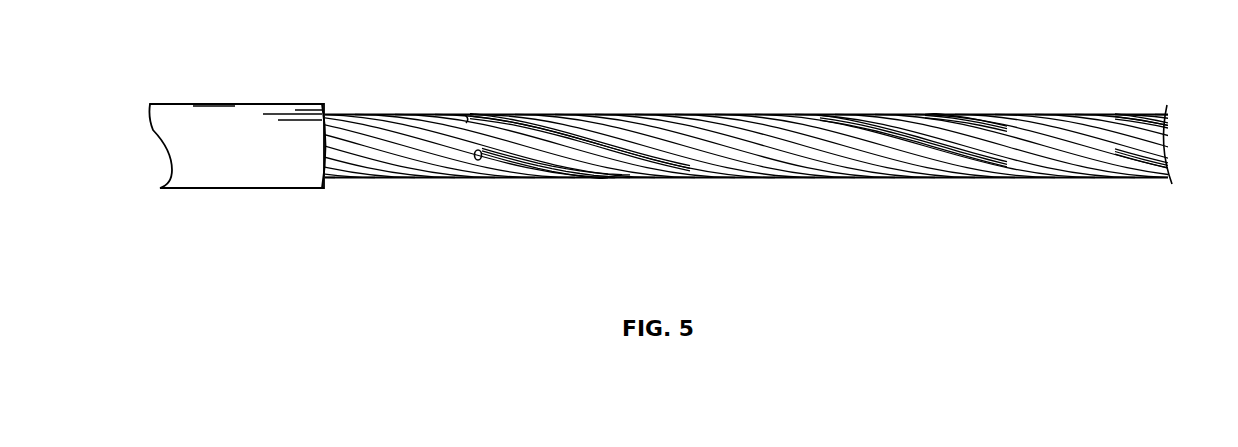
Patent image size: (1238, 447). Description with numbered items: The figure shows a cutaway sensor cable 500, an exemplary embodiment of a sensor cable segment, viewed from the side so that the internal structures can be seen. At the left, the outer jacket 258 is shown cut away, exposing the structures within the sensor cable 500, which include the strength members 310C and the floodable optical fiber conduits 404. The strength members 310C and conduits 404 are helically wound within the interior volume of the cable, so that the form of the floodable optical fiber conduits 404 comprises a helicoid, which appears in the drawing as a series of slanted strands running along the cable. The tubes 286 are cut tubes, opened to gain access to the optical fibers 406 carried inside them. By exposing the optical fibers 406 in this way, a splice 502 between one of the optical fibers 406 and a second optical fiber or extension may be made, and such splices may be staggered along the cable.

The cutaway sensor cable 500 is at (1113, 58).
The outer jacket 258 is at (204, 121).
The floodable optical fiber conduits 404 is at (360, 113).
The strength members 310C is at (453, 128).
The tubes 286 is at (458, 193).
The optical fibers 406 is at (553, 173).
The splice 502 is at (1067, 142).